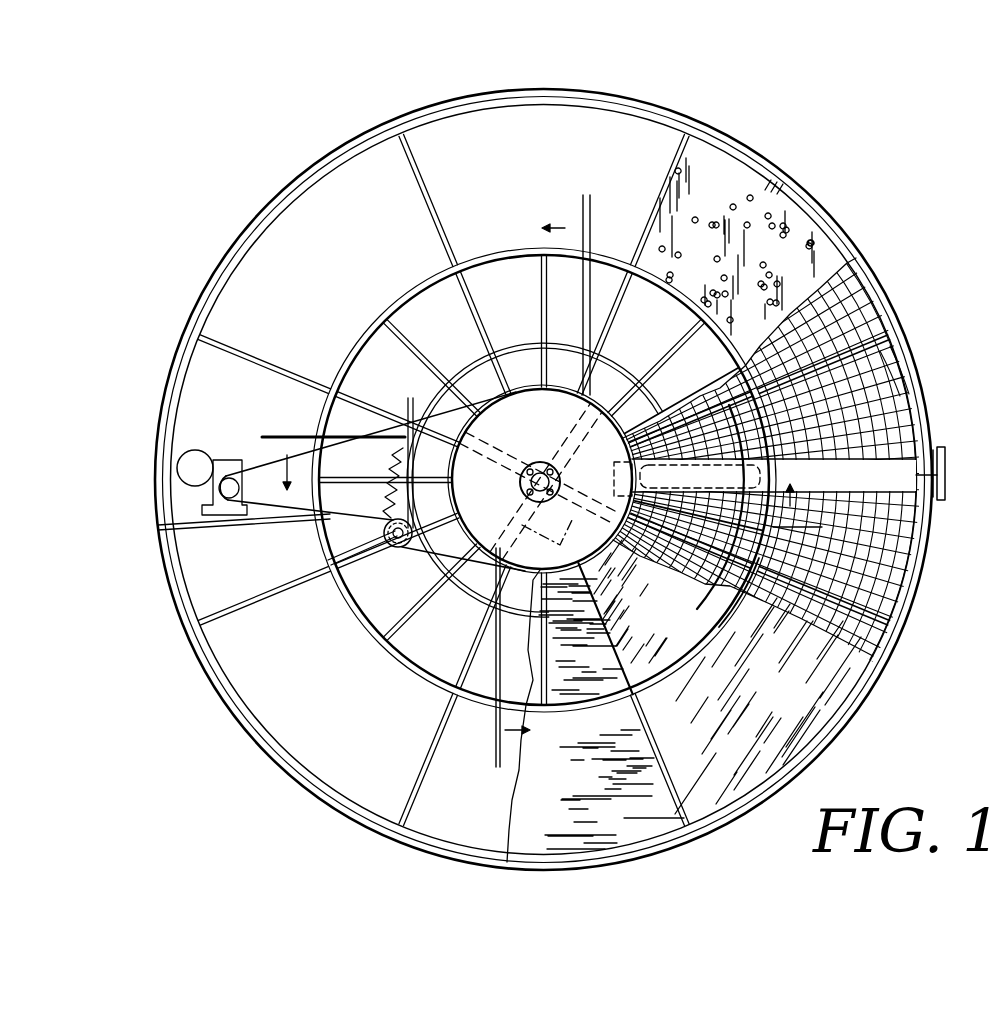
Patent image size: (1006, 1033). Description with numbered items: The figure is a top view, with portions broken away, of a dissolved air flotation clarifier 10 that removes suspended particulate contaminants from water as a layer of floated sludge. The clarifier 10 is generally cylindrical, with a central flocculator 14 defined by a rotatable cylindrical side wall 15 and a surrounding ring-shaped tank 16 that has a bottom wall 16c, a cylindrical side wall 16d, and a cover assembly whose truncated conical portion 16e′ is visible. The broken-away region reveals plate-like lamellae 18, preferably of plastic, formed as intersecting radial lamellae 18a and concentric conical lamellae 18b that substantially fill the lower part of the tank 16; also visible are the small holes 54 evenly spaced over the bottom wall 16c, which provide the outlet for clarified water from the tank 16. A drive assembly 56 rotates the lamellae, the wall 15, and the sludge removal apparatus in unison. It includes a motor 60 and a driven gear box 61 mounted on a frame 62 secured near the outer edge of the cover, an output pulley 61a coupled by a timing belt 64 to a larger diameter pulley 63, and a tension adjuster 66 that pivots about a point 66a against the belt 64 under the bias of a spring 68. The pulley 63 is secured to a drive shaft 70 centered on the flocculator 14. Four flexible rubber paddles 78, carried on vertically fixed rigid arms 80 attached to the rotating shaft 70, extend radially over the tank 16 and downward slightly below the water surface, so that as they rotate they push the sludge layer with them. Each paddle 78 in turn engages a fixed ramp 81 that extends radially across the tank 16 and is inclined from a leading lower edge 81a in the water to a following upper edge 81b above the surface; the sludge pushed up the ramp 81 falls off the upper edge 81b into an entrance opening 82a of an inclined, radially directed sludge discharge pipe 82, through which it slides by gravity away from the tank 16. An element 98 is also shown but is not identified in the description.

The DAF clarifier 10 is at (816, 152).
The central flocculator 14 is at (582, 535).
The rotatable cylindrical side wall 15 is at (603, 390).
The tank 16 is at (431, 150).
The bottom wall 16c is at (820, 222).
The cylindrical side wall 16d is at (335, 160).
The truncated conical portion 16e′ is at (832, 682).
The lamellae 18 is at (894, 333).
The radial lamellae 18a is at (868, 302).
The concentric conical lamellae 18b is at (903, 395).
The small holes 54 is at (768, 187).
The drive assembly 56 is at (184, 496).
The motor 60 is at (200, 452).
The gear box 61 is at (232, 474).
The output pulley 61a is at (240, 505).
The frame 62 is at (188, 528).
The pulley 63 is at (512, 480).
The timing belt 64 is at (415, 432).
The tension adjuster 66 is at (399, 550).
The pivot point 66a is at (340, 556).
The spring 68 is at (388, 455).
The drive shaft 70 is at (522, 480).
The flexible paddles 78 is at (586, 258).
The arms 80 is at (592, 210).
The fixed ramp 81 is at (660, 430).
The leading lower edge 81a is at (692, 582).
The following upper edge 81b is at (694, 398).
The sludge discharge pipe 82 is at (898, 496).
The entrance opening 82a is at (616, 460).
The blade end tab 98 is at (845, 428).